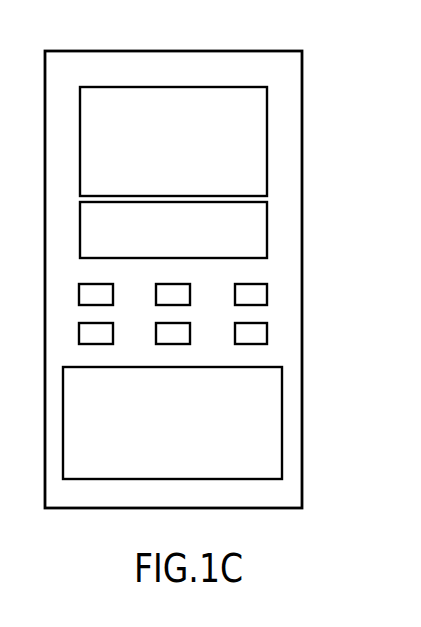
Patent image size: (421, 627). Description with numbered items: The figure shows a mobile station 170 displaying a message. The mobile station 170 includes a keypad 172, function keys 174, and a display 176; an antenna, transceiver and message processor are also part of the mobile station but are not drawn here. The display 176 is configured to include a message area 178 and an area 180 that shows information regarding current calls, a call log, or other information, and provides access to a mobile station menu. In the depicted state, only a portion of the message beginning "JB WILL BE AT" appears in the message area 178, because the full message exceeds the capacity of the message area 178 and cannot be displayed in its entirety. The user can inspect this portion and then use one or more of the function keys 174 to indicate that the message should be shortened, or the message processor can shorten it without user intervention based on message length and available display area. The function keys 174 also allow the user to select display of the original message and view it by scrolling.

The mobile station 170 is at (160, 51).
The keypad 172 is at (282, 430).
The function keys 174 is at (262, 323).
The display 176 is at (267, 160).
The message area 178 is at (267, 127).
The area 180 is at (267, 238).